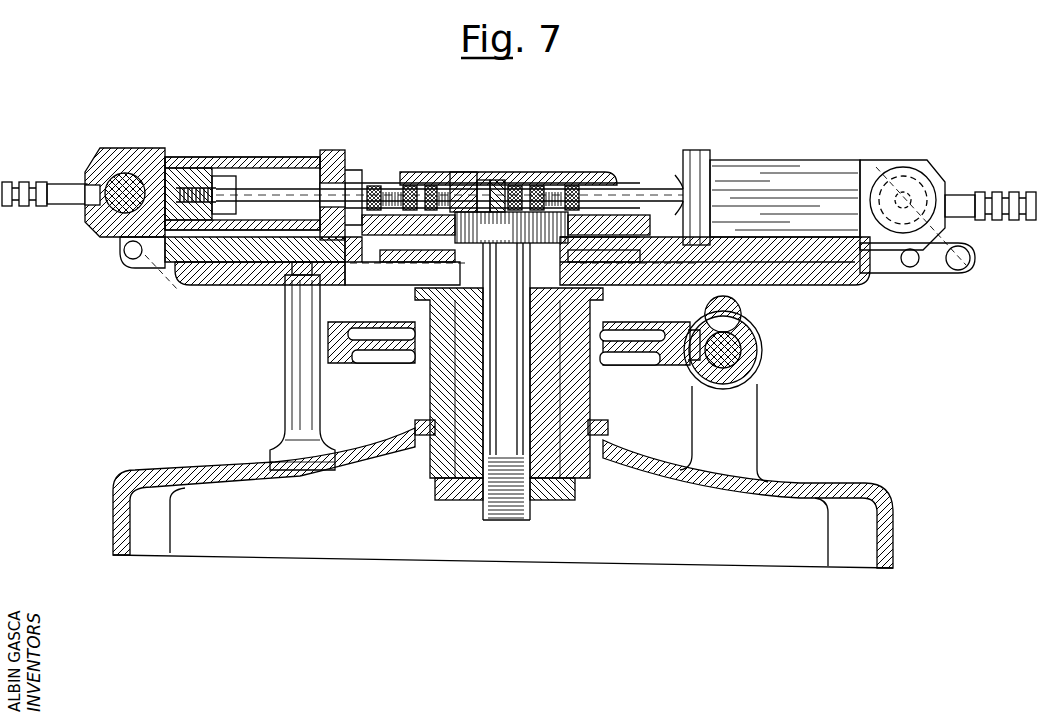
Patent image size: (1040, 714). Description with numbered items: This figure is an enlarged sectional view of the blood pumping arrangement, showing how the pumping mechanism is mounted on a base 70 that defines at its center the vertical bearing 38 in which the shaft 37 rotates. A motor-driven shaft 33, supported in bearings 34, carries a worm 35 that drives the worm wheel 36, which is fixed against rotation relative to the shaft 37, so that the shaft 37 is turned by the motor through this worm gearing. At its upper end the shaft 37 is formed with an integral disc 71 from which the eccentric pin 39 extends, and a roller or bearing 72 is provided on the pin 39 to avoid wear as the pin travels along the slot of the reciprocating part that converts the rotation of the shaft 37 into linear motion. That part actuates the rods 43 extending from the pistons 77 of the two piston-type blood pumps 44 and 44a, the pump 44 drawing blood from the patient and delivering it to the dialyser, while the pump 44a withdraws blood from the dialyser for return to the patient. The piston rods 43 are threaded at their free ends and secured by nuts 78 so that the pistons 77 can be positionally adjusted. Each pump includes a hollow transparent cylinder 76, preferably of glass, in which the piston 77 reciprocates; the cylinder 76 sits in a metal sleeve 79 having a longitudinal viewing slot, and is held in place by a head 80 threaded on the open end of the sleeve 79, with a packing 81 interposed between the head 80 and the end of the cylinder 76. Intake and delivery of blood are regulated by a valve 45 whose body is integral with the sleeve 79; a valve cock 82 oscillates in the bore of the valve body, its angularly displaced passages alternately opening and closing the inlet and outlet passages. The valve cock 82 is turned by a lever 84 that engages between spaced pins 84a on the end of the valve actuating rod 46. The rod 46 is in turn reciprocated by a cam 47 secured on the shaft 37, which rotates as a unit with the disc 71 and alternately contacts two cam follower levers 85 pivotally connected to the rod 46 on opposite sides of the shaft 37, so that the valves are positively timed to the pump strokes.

The shaft 33 is at (745, 358).
The bearings 34 is at (745, 400).
The worm 35 is at (736, 340).
The worm wheel 36 is at (350, 366).
The shaft 37 is at (500, 394).
The vertical bearing 38 is at (440, 397).
The eccentric pin 39 is at (481, 182).
The rods 43 is at (286, 195).
The pump 44 is at (278, 160).
The pump 44a is at (770, 160).
The valve 45 is at (150, 160).
The rod 46 is at (165, 262).
The cam 47 is at (552, 255).
The base 70 is at (872, 497).
The disc 71 is at (506, 241).
The roller or bearing 72 is at (463, 182).
The hollow cylinder 76 is at (226, 176).
The piston 77 is at (190, 168).
The nuts 78 is at (375, 185).
The metal sleeve 79 is at (255, 172).
The head 80 is at (336, 155).
The packing 81 is at (352, 168).
The valve cock 82 is at (122, 175).
The lever 84 is at (166, 276).
The pins 84a is at (124, 252).
The cam follower levers 85 is at (438, 260).